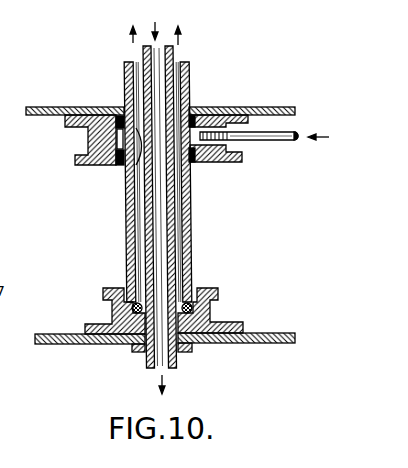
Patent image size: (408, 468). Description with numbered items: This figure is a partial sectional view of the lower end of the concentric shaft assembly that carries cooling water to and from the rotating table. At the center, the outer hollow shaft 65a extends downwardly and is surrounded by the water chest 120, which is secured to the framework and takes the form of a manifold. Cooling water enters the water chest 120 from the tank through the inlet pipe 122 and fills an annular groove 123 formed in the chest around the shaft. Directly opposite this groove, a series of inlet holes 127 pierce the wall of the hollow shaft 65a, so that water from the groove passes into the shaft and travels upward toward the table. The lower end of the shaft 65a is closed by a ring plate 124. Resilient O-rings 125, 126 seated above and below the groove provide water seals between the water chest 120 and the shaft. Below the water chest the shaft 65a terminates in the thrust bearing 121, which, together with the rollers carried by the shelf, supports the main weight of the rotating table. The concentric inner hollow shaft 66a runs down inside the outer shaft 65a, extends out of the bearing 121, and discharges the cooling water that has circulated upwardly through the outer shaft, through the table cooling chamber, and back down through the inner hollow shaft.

The hollow shaft 65a is at (128, 238).
The concentric inner hollow shaft 66a is at (178, 243).
The water chest 120 is at (87, 140).
The thrust bearing 121 is at (112, 309).
The inlet pipe 122 is at (277, 141).
The annular groove 123 is at (117, 153).
The ring plate 124 is at (186, 301).
The resilient O-ring 125 is at (118, 114).
The resilient O-ring 126 is at (202, 163).
The inlet holes 127 is at (134, 187).